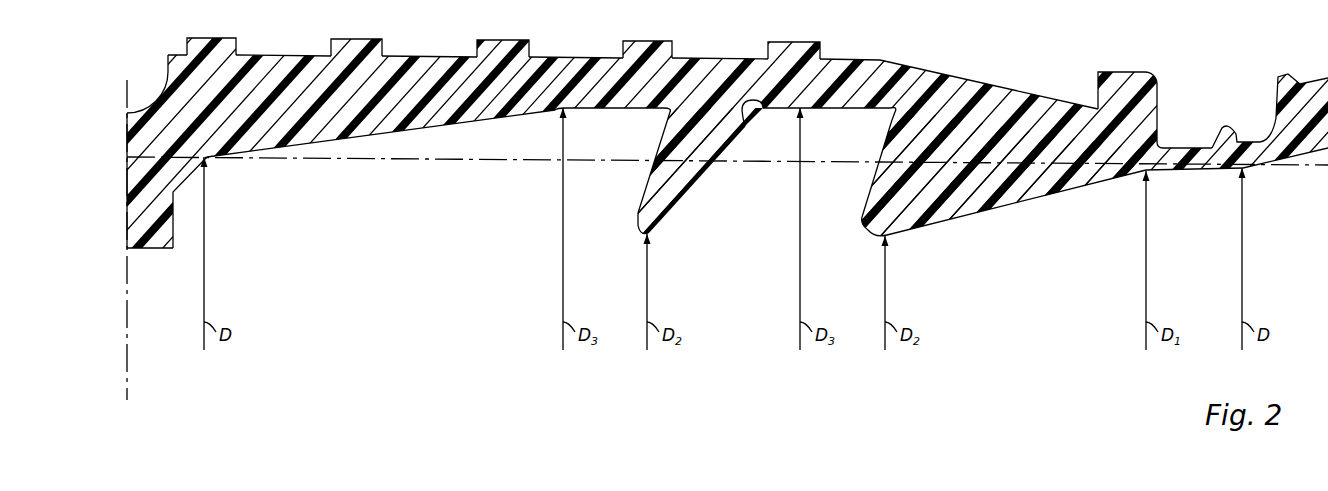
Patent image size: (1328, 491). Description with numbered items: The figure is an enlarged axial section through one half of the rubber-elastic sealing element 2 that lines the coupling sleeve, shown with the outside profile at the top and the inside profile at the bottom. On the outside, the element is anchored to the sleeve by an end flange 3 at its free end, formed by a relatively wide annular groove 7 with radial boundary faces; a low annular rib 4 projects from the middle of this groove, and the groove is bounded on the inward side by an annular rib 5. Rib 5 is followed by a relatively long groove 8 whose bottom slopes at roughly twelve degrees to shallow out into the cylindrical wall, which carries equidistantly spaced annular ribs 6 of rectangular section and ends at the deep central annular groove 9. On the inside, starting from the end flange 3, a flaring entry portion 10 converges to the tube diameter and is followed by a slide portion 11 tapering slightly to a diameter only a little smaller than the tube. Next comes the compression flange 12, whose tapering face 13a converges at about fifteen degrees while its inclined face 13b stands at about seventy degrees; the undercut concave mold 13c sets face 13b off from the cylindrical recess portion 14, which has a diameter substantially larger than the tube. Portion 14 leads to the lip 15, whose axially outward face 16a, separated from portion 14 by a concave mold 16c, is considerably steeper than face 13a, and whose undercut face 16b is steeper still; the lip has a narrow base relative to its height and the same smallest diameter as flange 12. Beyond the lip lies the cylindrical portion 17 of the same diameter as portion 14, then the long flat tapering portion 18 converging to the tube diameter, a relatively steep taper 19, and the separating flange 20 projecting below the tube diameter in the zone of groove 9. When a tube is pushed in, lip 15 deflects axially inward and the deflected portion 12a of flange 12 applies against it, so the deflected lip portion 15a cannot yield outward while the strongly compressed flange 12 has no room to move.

The sealing element 2 is at (567, 58).
The end flange 3 is at (1290, 92).
The annular rib 4 is at (1227, 137).
The annular rib 5 is at (1137, 88).
The annular ribs 6 is at (357, 45).
The annular groove 7 is at (1173, 149).
The groove 8 is at (1015, 89).
The annular groove 9 is at (152, 100).
The flaring entry portion 10 is at (1287, 158).
The slide portion 11 is at (1172, 172).
The compression flange 12 is at (1036, 175).
The deflected portion of flange 12a is at (902, 231).
The tapering flange face 13a is at (1005, 207).
The inclined face 13b is at (866, 194).
The concave mold 13c is at (907, 113).
The cylindrical recess portion 14 is at (844, 109).
The lip 15 is at (720, 132).
The deflected lip portion 15a is at (652, 223).
The axially outward face of lip 16a is at (704, 176).
The undercut face of lip 16b is at (642, 196).
The concave mold 16c is at (749, 110).
The cylindrical portion 17 is at (624, 109).
The flat tapering portion 18 is at (326, 141).
The steep taper 19 is at (186, 176).
The separating flange 20 is at (157, 249).